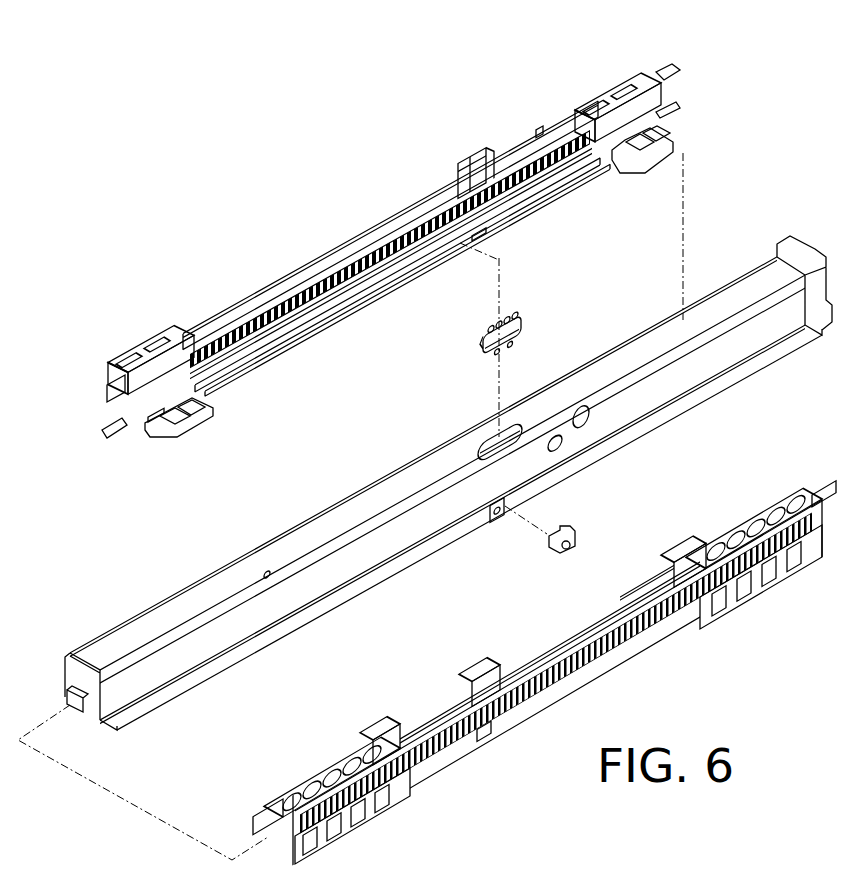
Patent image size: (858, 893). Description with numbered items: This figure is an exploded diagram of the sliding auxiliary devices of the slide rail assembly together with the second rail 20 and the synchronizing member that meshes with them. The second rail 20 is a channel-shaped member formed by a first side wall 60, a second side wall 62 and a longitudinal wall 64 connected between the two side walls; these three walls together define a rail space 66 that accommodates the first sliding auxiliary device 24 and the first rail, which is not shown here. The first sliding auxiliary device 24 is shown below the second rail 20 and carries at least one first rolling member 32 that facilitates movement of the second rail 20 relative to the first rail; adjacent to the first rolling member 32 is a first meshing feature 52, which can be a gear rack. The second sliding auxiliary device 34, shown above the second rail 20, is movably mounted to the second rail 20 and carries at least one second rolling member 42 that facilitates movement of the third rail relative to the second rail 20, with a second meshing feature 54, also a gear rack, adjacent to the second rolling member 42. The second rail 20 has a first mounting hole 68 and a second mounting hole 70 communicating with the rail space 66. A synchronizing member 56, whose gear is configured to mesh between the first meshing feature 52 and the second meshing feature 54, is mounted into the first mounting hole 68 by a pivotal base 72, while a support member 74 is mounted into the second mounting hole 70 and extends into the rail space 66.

The second rail 20 is at (139, 600).
The first sliding auxiliary device 24 is at (567, 812).
The first rolling member 32 is at (337, 770).
The second sliding auxiliary device 34 is at (201, 195).
The second rolling member 42 is at (602, 92).
The first meshing feature 52 is at (485, 725).
The second meshing feature 54 is at (310, 308).
The synchronizing member 56 is at (507, 317).
The first side wall 60 is at (66, 677).
The second side wall 62 is at (182, 656).
The longitudinal wall 64 is at (202, 590).
The rail space 66 is at (90, 723).
The first mounting hole 68 is at (487, 446).
The second mounting hole 70 is at (484, 504).
The pivotal base 72 is at (521, 323).
The support member 74 is at (573, 531).